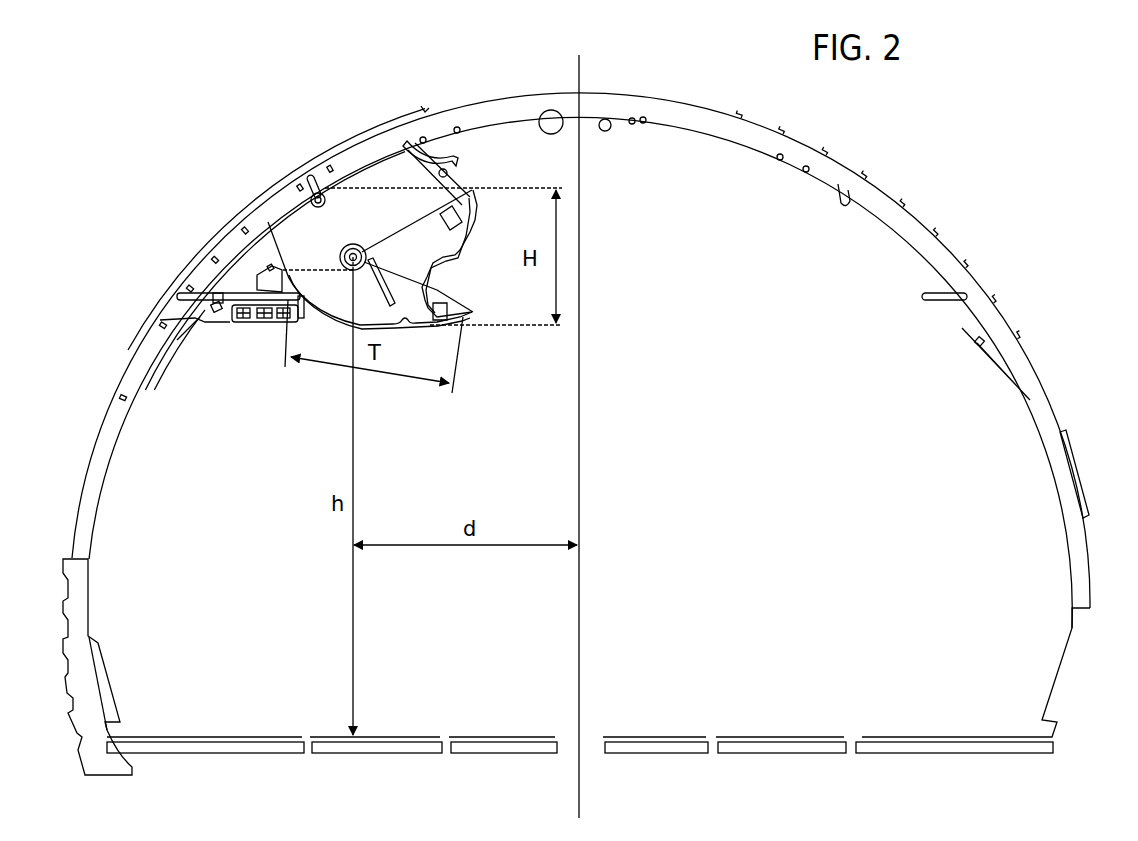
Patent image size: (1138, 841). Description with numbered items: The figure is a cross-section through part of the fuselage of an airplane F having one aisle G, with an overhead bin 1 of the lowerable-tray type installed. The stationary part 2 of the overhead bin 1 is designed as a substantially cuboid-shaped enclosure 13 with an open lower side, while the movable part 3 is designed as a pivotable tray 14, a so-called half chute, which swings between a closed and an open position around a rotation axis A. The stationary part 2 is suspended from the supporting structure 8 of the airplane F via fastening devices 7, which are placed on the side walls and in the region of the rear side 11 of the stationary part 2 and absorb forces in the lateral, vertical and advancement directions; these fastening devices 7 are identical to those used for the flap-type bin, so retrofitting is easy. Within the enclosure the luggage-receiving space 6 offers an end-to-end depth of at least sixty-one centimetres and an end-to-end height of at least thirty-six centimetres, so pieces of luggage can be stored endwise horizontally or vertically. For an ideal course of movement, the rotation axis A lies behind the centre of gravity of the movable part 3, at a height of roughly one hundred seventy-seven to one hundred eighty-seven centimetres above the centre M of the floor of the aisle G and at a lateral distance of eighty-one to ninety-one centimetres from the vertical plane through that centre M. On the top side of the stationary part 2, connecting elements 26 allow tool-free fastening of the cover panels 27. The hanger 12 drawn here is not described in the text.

The overhead bin 1 is at (293, 235).
The stationary part 2 is at (451, 91).
The cuboid-shaped enclosure 13 is at (405, 163).
The movable part 3 is at (262, 332).
The tray 14 is at (327, 300).
The luggage-receiving space 6 is at (406, 251).
The fastening device 7 is at (316, 197).
The supporting structure 8 is at (353, 155).
The rear side 11 is at (253, 263).
The hanger 12 is at (310, 173).
The connecting element 26 is at (200, 295).
The cover panel 27 is at (180, 323).
The rotation axis A is at (356, 247).
The aisle G is at (591, 436).
The centre of the floor of the aisle M is at (579, 748).
The airplane F is at (916, 224).